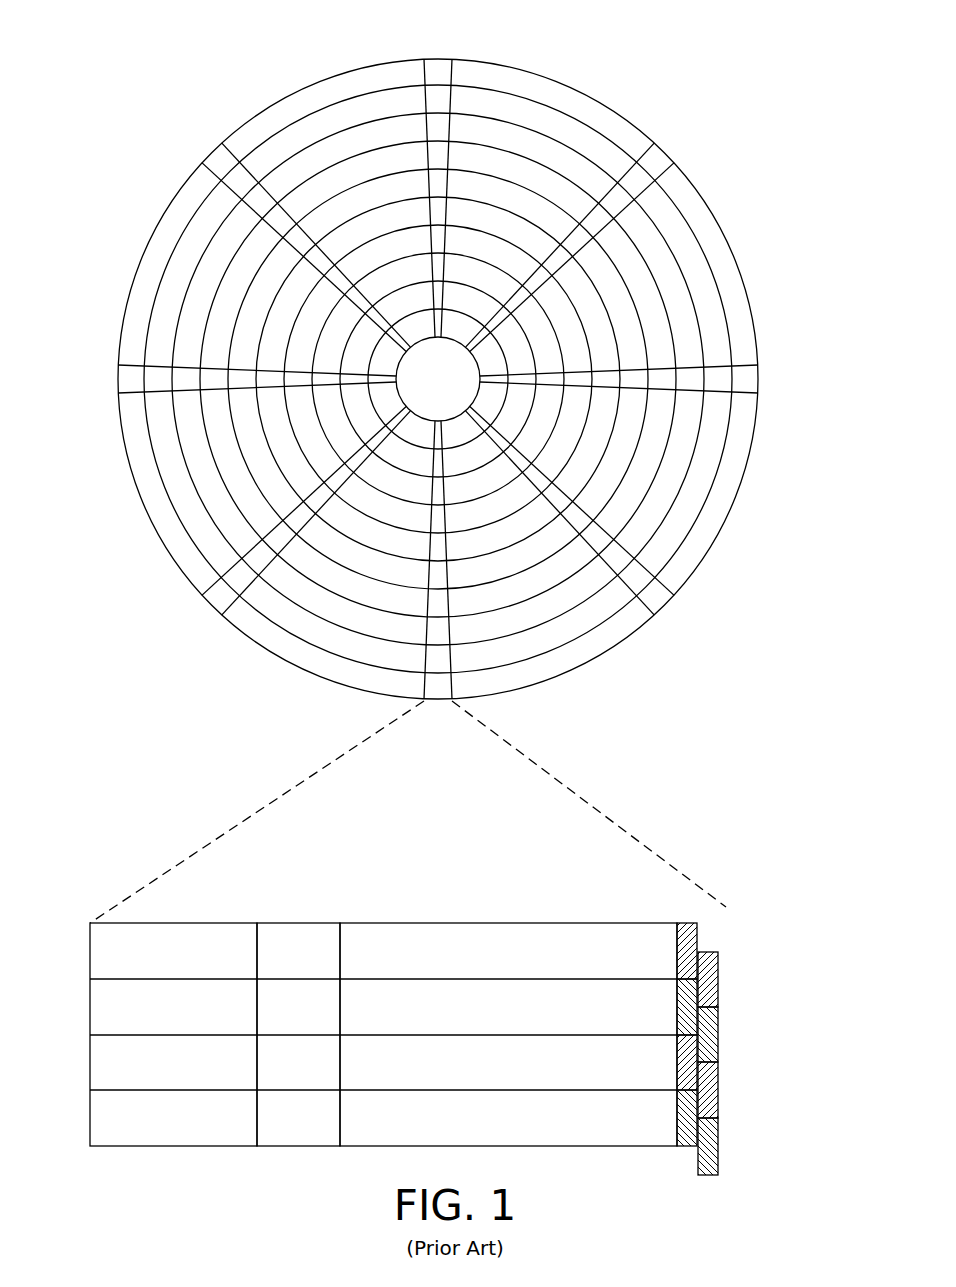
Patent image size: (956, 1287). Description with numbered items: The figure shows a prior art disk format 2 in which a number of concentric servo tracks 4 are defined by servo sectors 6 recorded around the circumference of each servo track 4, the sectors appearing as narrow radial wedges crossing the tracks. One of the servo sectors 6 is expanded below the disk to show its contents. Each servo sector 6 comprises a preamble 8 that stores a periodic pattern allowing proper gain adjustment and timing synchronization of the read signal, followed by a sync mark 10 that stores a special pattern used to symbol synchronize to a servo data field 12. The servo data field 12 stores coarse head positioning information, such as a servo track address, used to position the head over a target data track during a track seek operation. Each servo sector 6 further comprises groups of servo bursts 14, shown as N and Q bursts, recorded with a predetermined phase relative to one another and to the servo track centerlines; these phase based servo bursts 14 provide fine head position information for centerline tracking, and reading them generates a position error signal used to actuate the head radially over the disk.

The disk format 2 is at (203, 63).
The servo track 4 is at (548, 123).
The servo sector 6 is at (297, 776).
The preamble 8 is at (182, 923).
The sync mark 10 is at (303, 923).
The servo data field 12 is at (499, 923).
The servo bursts 14 is at (714, 919).